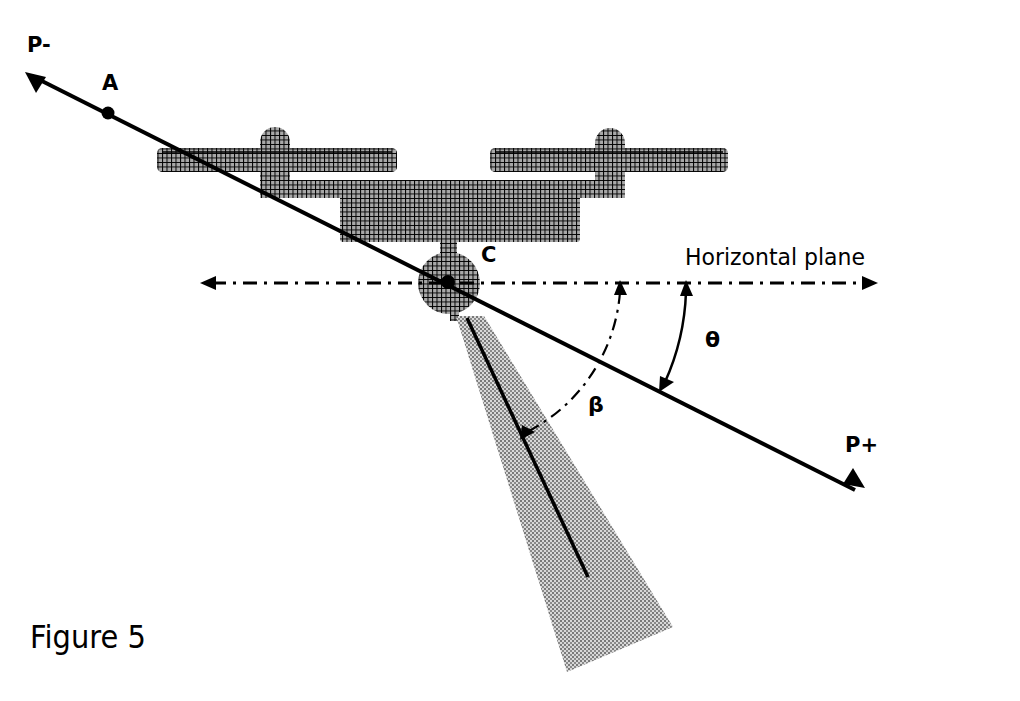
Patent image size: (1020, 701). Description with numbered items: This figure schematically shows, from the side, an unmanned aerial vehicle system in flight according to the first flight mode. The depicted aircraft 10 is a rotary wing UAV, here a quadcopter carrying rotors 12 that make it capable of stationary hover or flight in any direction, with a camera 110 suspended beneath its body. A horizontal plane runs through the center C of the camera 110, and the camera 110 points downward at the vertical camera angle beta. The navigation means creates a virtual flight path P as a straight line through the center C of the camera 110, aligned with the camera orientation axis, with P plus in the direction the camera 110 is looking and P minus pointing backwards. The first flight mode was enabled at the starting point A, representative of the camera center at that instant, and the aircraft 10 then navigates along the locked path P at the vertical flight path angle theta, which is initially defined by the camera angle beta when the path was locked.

The aircraft 10 is at (478, 115).
The rotors 12 is at (245, 135).
The camera 110 is at (413, 315).